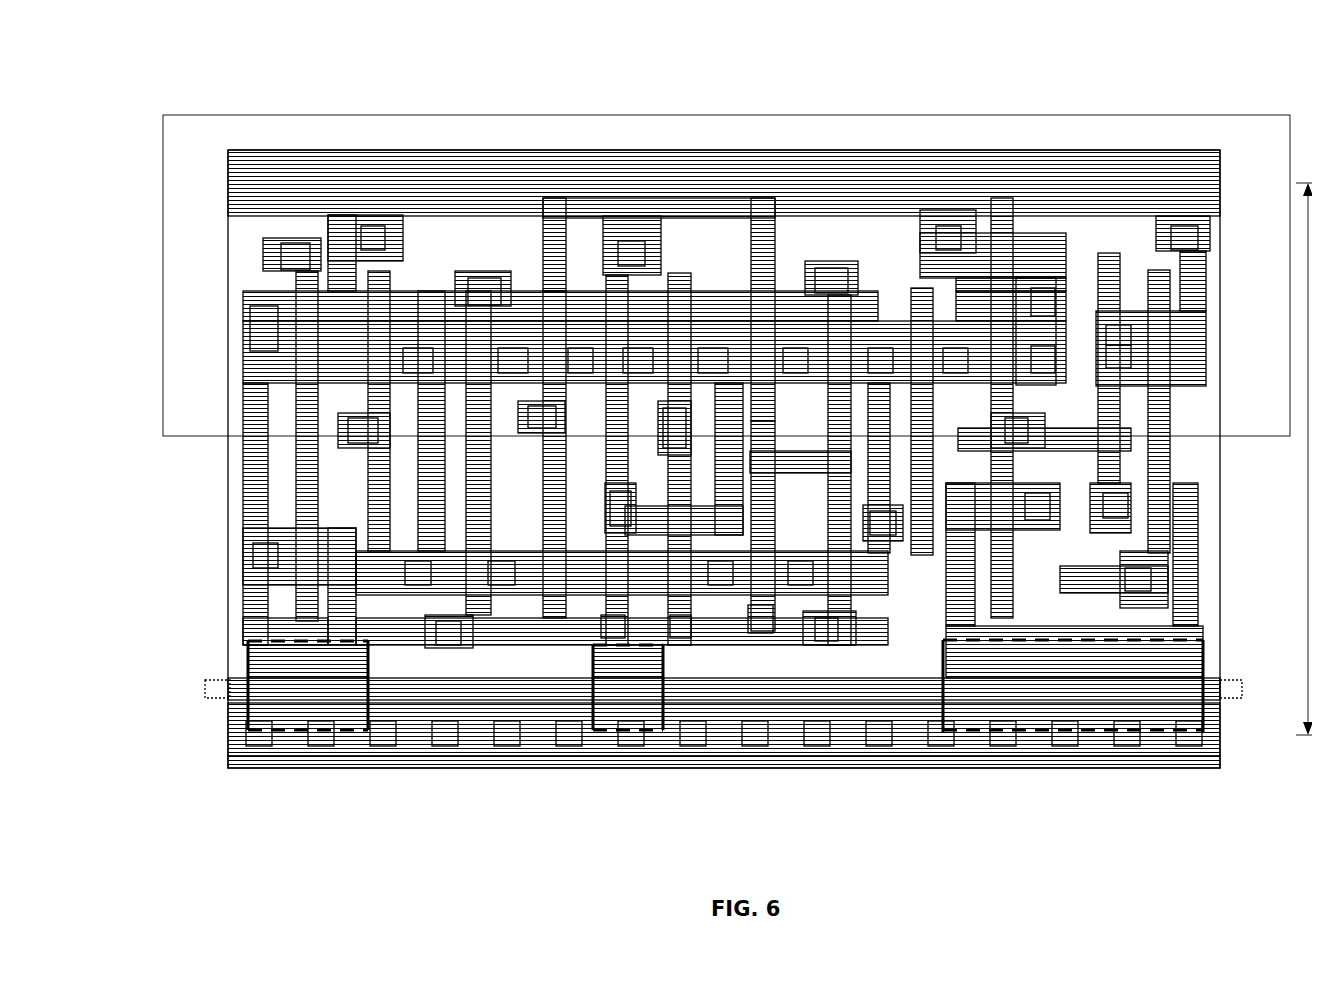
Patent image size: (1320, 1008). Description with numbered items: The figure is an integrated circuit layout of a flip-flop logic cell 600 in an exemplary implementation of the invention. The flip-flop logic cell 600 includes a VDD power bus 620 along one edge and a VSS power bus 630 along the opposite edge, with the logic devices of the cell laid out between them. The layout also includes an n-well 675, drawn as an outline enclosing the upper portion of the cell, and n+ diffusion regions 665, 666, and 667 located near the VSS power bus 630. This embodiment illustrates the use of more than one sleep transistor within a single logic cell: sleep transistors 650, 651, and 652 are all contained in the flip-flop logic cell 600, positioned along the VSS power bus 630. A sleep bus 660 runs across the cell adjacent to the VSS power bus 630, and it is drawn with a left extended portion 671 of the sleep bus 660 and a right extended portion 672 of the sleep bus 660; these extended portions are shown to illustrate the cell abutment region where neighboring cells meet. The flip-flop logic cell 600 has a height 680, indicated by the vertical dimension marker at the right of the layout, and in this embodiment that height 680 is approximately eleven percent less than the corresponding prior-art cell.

The flip-flop logic cell 600 is at (156, 66).
The VDD power bus 620 is at (220, 164).
The VSS power bus 630 is at (235, 722).
The sleep transistor 650 is at (355, 718).
The sleep transistor 651 is at (640, 718).
The sleep transistor 652 is at (1118, 718).
The sleep bus 660 is at (475, 693).
The n+ diffusion 665 is at (257, 648).
The n+ diffusion 666 is at (602, 658).
The n+ diffusion 667 is at (966, 658).
The left extended portion of sleep bus 671 is at (199, 681).
The right extended portion of sleep bus 672 is at (1235, 692).
The n-well 675 is at (155, 331).
The height 680 is at (1300, 313).